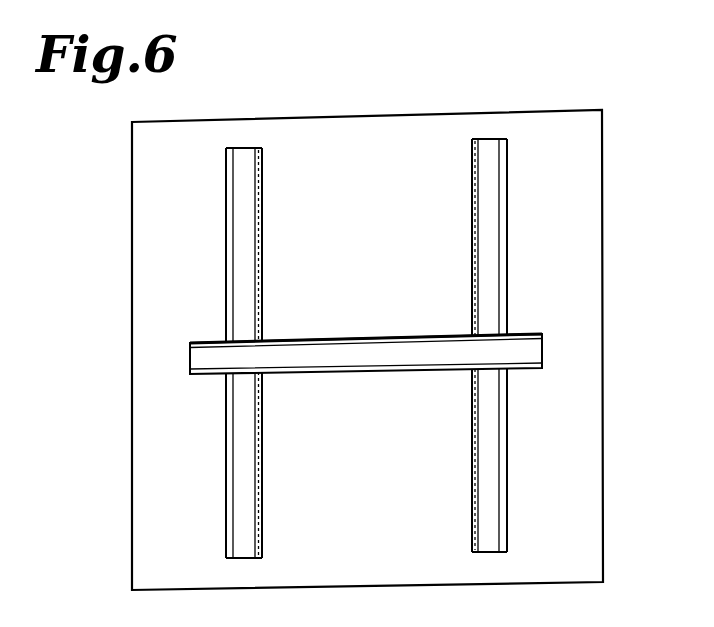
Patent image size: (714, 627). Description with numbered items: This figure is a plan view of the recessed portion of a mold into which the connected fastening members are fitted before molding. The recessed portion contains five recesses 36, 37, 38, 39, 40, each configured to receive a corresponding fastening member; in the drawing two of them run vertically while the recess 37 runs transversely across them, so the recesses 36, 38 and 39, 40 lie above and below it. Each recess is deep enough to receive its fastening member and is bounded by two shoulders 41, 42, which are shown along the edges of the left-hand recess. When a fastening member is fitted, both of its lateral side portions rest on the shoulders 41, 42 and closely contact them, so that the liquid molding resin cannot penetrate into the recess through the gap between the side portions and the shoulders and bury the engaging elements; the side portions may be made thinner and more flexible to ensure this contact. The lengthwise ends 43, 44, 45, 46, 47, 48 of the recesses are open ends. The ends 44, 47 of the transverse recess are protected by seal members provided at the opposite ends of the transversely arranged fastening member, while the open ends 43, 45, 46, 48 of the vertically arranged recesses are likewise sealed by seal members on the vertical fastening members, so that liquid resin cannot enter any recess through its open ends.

The recess 36 is at (230, 232).
The recess 37 is at (375, 369).
The recess 38 is at (228, 477).
The recess 39 is at (507, 457).
The recess 40 is at (507, 243).
The shoulder 41 is at (226, 296).
The shoulder 42 is at (262, 262).
The lengthwise end 43 is at (248, 148).
The lengthwise end 44 is at (190, 358).
The lengthwise end 45 is at (253, 558).
The lengthwise end 46 is at (497, 552).
The lengthwise end 47 is at (542, 348).
The lengthwise end 48 is at (485, 133).